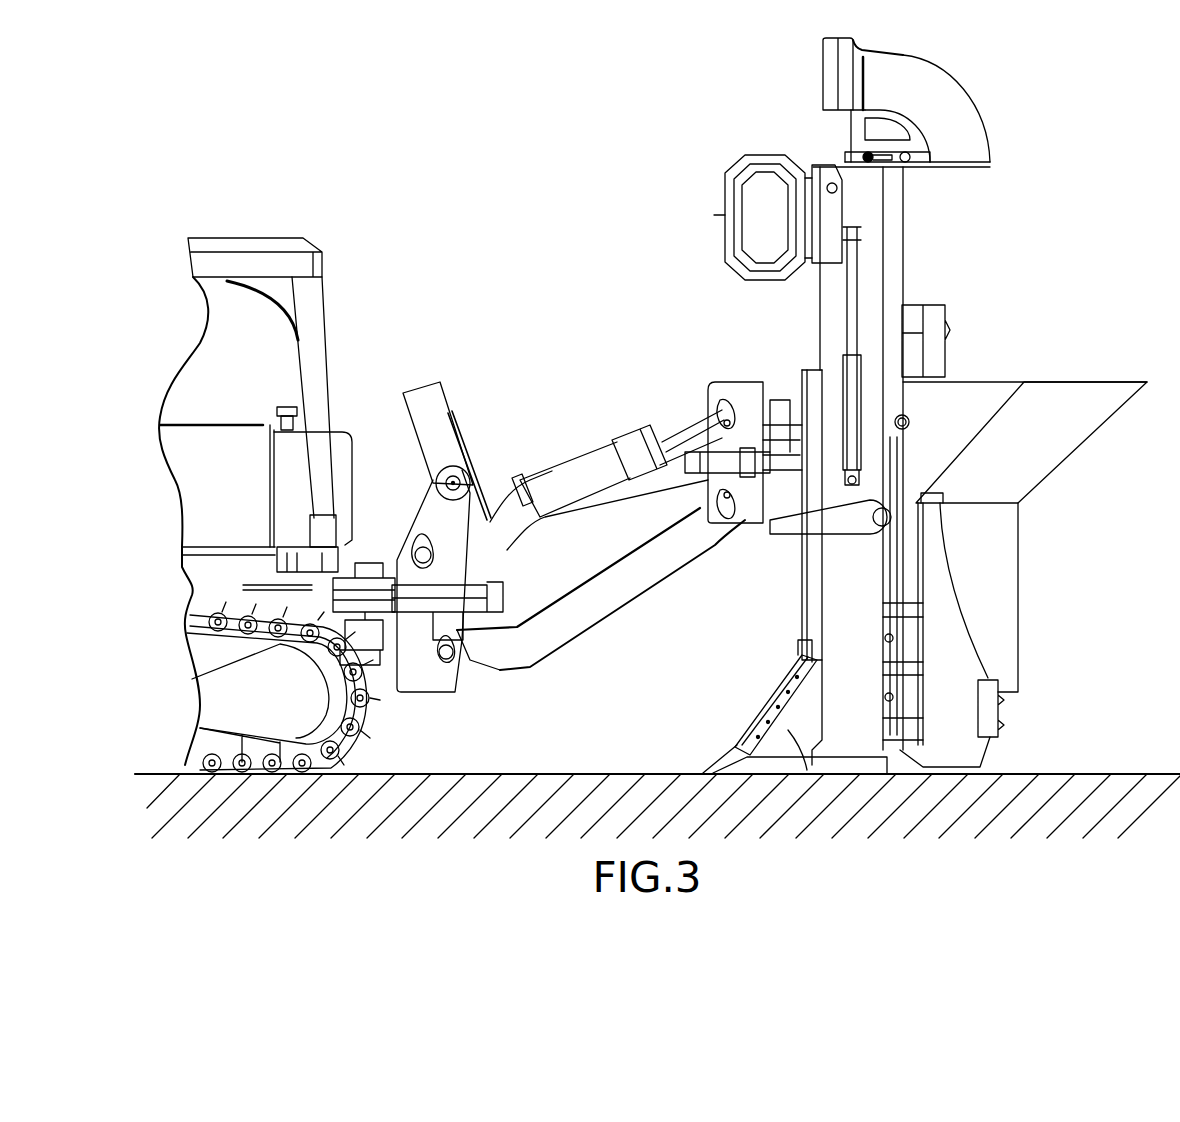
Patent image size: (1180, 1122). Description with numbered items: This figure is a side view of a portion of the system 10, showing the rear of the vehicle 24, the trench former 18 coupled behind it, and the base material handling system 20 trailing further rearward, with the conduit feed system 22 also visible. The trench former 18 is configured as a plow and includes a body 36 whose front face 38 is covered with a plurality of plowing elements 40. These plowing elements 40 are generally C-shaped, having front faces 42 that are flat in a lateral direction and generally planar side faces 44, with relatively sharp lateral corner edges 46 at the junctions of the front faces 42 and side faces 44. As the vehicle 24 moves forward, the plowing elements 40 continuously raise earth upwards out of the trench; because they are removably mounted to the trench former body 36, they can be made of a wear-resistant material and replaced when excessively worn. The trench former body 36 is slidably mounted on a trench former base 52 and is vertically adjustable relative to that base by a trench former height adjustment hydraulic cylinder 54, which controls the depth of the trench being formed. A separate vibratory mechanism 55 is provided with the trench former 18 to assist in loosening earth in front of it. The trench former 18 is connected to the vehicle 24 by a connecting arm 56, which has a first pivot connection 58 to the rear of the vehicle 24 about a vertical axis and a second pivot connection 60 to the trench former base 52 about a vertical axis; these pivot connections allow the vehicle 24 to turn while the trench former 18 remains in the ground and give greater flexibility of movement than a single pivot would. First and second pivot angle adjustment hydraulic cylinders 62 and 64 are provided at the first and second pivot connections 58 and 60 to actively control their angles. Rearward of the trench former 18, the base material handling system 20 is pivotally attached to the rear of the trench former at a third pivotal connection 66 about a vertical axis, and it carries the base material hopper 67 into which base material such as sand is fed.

The system 10 is at (438, 163).
The trench former 18 is at (842, 730).
The base material handling system 20 is at (987, 385).
The conduit feed system 22 is at (930, 305).
The vehicle 24 is at (268, 206).
The trench former body 36 is at (845, 727).
The front face 38 is at (808, 597).
The plowing elements 40 is at (785, 668).
The front faces 42 is at (750, 725).
The side faces 44 is at (813, 743).
The lateral corner edges 46 is at (768, 700).
The trench former base 52 is at (808, 375).
The trench former height adjustment hydraulic cylinder 54 is at (846, 355).
The vibratory mechanism 55 is at (752, 193).
The connecting arm 56 is at (532, 652).
The first pivot connection 58 is at (390, 678).
The second pivot connection 60 is at (655, 610).
The first pivot angle adjustment hydraulic cylinder 62 is at (437, 600).
The second pivot angle adjustment hydraulic cylinder 64 is at (713, 470).
The third pivotal connection 66 is at (925, 662).
The base material hopper 67 is at (1105, 382).